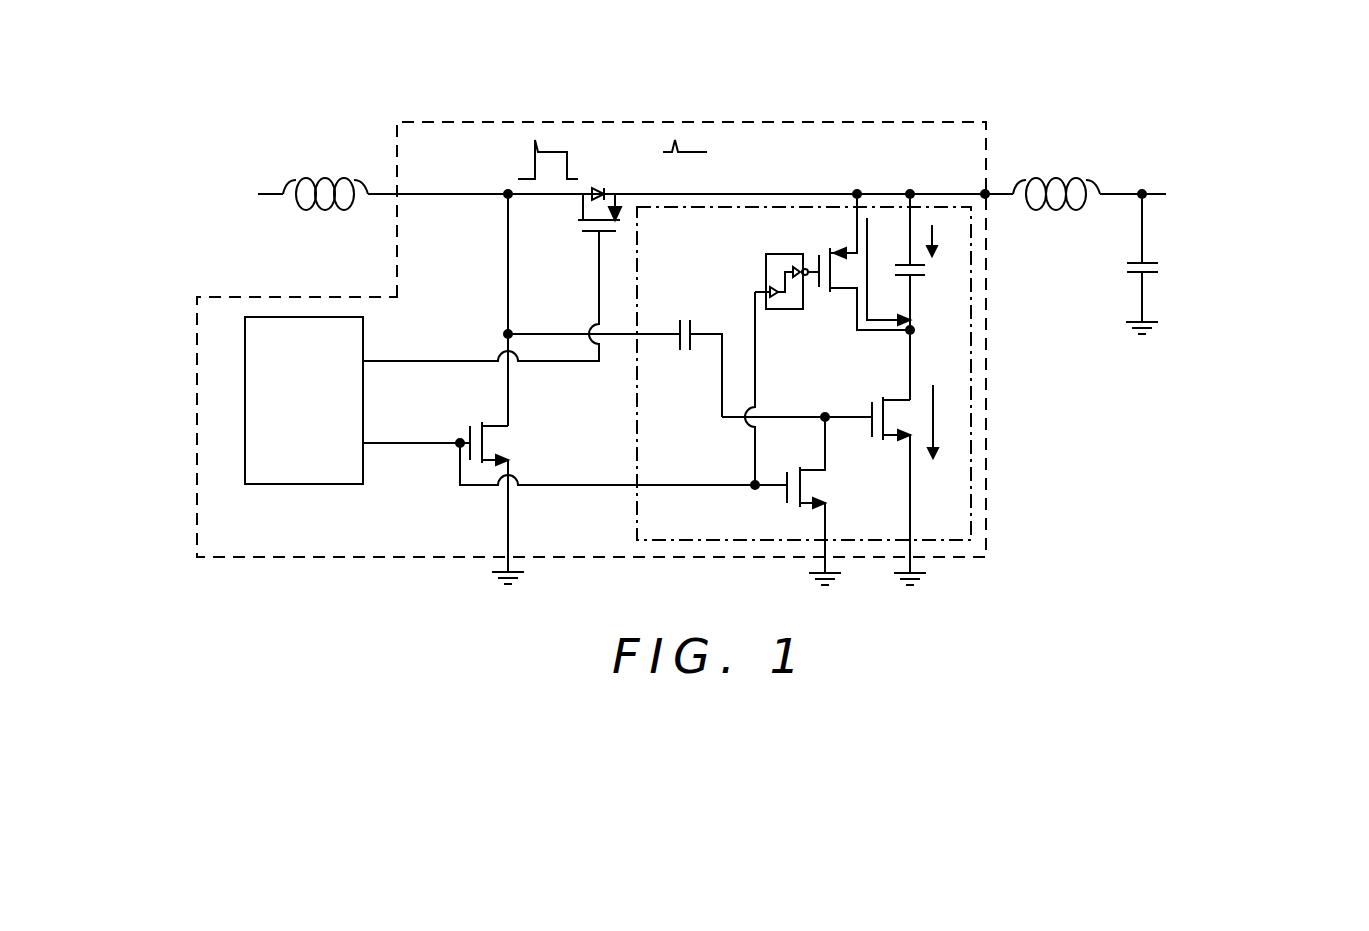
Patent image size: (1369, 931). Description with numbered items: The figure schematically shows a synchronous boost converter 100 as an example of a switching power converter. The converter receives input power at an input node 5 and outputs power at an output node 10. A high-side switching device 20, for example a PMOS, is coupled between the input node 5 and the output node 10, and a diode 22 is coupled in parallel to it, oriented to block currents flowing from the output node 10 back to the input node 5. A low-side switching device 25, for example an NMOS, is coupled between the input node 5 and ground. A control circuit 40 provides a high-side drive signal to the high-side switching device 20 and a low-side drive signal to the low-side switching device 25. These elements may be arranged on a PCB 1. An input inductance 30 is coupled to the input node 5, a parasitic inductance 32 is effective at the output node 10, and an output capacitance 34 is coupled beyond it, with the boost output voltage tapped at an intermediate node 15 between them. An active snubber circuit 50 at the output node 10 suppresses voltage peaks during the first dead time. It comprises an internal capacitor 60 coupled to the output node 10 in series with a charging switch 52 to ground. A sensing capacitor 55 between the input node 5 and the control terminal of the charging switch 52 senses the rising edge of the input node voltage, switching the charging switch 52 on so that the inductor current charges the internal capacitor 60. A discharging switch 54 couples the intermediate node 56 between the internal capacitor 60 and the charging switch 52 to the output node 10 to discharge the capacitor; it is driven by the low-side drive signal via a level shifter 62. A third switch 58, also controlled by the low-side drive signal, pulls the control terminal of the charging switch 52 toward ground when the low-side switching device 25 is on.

The boost converter 100 is at (304, 58).
The PCB 1 is at (318, 557).
The input node 5 is at (506, 200).
The output node 10 is at (978, 190).
The intermediate node 15 is at (1142, 187).
The high-side switching device 20 is at (578, 226).
The diode 22 is at (598, 186).
The low-side switching device 25 is at (500, 441).
The input inductance 30 is at (326, 179).
The parasitic inductance 32 is at (1058, 179).
The output capacitance 34 is at (1130, 268).
The control circuit 40 is at (304, 484).
The active snubber circuit 50 is at (975, 488).
The charging switch 52 is at (881, 444).
The discharging switch 54 is at (830, 252).
The sensing capacitor 55 is at (672, 342).
The intermediate node 56 is at (905, 339).
The third switch 58 is at (795, 508).
The internal capacitor 60 is at (895, 266).
The level shifter 62 is at (766, 259).